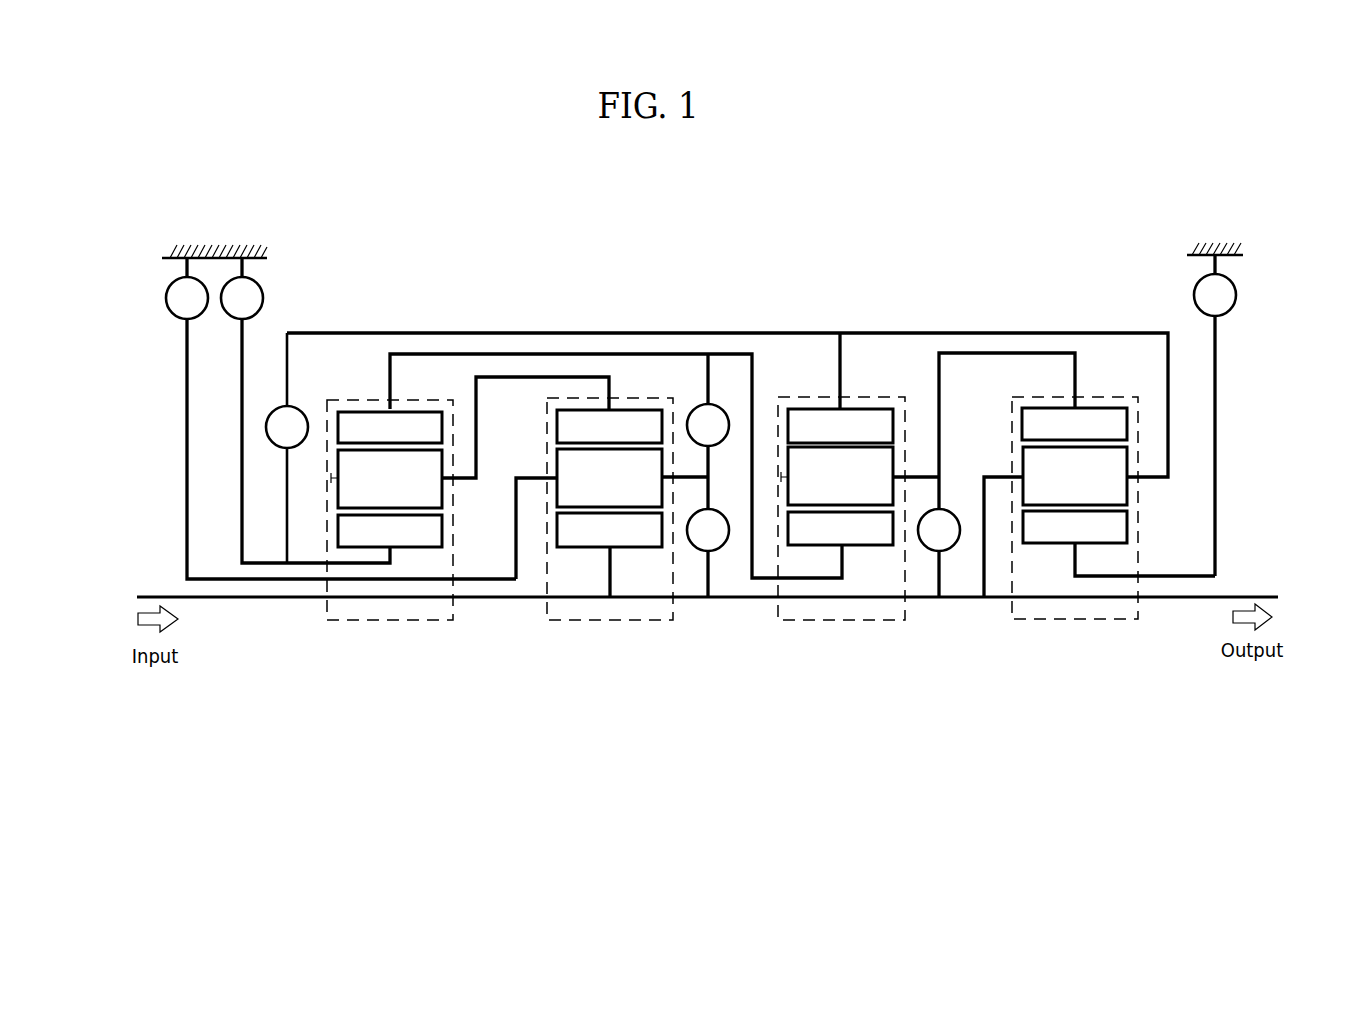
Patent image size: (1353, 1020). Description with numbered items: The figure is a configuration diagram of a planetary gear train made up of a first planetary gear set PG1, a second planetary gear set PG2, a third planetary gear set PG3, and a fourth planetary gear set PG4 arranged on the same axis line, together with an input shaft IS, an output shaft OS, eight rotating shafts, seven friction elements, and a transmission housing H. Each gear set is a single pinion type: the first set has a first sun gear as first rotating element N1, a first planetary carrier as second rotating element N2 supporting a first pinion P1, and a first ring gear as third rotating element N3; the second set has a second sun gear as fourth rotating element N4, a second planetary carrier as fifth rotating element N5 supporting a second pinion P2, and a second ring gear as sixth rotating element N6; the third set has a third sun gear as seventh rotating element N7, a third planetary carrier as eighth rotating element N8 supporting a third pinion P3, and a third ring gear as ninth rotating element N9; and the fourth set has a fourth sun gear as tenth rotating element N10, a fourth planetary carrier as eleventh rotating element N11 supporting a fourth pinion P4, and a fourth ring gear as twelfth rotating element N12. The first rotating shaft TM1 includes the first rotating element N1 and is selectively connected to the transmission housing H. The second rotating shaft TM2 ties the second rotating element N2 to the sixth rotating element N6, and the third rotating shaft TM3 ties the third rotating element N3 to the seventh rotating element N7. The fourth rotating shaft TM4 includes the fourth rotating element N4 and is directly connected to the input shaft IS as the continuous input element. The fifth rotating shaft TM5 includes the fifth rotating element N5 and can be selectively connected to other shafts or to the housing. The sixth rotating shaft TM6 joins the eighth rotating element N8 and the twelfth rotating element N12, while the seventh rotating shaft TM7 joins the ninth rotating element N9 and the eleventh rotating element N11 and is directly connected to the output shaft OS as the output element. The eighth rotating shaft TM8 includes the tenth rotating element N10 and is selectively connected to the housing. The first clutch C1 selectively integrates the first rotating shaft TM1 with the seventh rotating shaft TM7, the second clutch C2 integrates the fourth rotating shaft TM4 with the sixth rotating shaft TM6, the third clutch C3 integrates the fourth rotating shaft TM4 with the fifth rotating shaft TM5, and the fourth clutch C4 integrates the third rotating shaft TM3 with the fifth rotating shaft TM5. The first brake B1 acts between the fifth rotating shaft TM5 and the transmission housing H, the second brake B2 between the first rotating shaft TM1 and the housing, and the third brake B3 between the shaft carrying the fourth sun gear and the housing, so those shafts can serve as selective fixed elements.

The input shaft IS is at (150, 596).
The output shaft OS is at (1245, 595).
The transmission housing H is at (226, 246).
The first brake B1 is at (187, 288).
The second brake B2 is at (242, 288).
The third brake B3 is at (1215, 285).
The first clutch C1 is at (287, 448).
The second clutch C2 is at (926, 537).
The third clutch C3 is at (708, 553).
The fourth clutch C4 is at (695, 431).
The first rotating shaft TM1 is at (282, 581).
The second rotating shaft TM2 is at (559, 375).
The third rotating shaft TM3 is at (650, 352).
The fourth rotating shaft TM4 is at (727, 601).
The fifth rotating shaft TM5 is at (487, 583).
The sixth rotating shaft TM6 is at (985, 351).
The seventh rotating shaft TM7 is at (867, 331).
The eighth rotating shaft TM8 is at (1219, 438).
The first planetary gear set PG1 is at (381, 624).
The second planetary gear set PG2 is at (609, 624).
The third planetary gear set PG3 is at (839, 624).
The fourth planetary gear set PG4 is at (1073, 623).
The first pinion P1 is at (386, 479).
The second pinion P2 is at (609, 478).
The third pinion P3 is at (837, 476).
The fourth pinion P4 is at (1055, 522).
The first rotating element N1 is at (342, 441).
The second rotating element N2 is at (461, 481).
The third rotating element N3 is at (390, 427).
The fourth rotating element N4 is at (609, 555).
The fifth rotating element N5 is at (526, 476).
The sixth rotating element N6 is at (609, 426).
The seventh rotating element N7 is at (840, 528).
The eighth rotating element N8 is at (925, 475).
The ninth rotating element N9 is at (840, 388).
The tenth rotating element N10 is at (1119, 543).
The eleventh rotating element N11 is at (1158, 479).
The twelfth rotating element N12 is at (1074, 424).